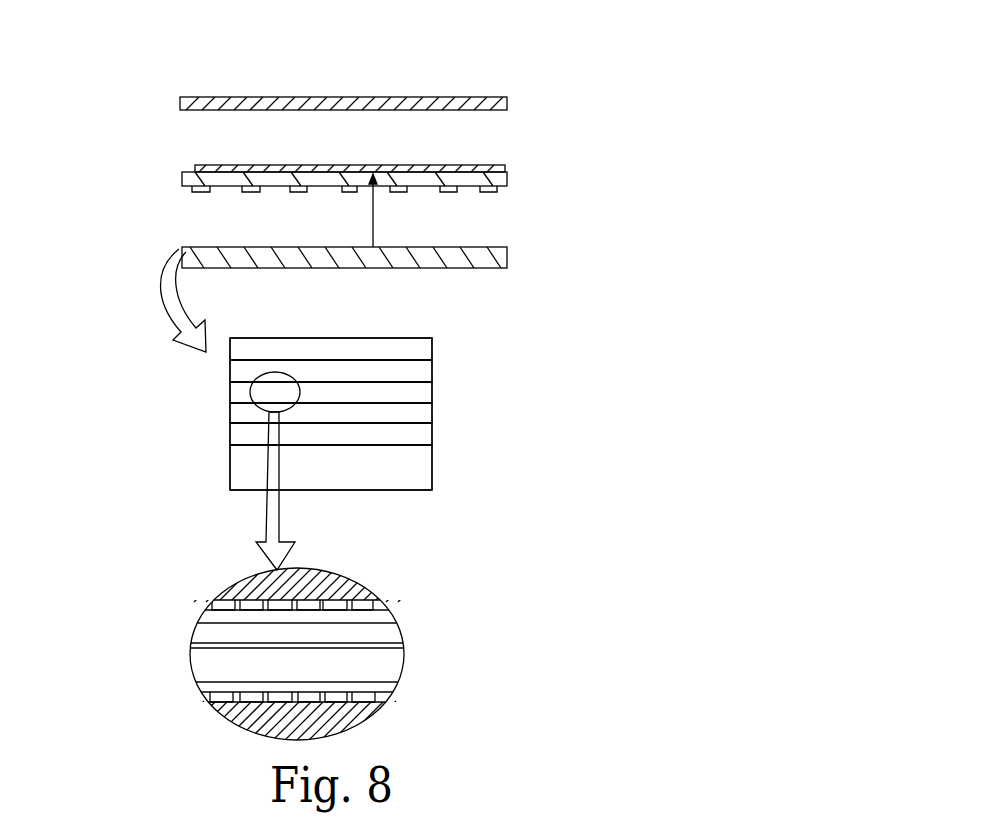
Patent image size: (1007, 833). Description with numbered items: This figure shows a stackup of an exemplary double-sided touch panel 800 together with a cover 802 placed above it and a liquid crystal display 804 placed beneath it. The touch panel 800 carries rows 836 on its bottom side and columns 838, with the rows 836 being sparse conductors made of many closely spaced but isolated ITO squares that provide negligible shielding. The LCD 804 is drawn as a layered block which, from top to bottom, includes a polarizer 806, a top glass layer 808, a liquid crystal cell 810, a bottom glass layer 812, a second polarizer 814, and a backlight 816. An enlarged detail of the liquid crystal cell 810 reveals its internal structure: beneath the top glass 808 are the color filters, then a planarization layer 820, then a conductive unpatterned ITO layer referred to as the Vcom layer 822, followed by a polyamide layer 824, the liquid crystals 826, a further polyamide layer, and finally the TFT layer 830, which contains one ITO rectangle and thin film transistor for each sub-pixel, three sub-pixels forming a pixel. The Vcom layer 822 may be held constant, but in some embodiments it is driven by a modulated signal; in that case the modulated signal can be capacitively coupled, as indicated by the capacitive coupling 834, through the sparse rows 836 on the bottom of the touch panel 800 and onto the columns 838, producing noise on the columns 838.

The double-sided touch panel 800 is at (180, 178).
The cover 802 is at (507, 104).
The liquid crystal display 804 is at (507, 258).
The polarizer 806 is at (432, 350).
The top glass layer 808 is at (432, 373).
The liquid crystal layer 810 is at (432, 392).
The bottom glass layer 812 is at (432, 415).
The polarizer 814 is at (432, 437).
The backlight 816 is at (432, 470).
The planarization layer 820 is at (210, 615).
The Vcom layer 822 is at (393, 633).
The polyamide layer 824 is at (200, 690).
The liquid crystal layer 826 is at (393, 665).
The TFT layer 830 is at (380, 698).
The capacitive coupling 834 is at (373, 230).
The rows 836 is at (248, 178).
The columns 838 is at (295, 170).